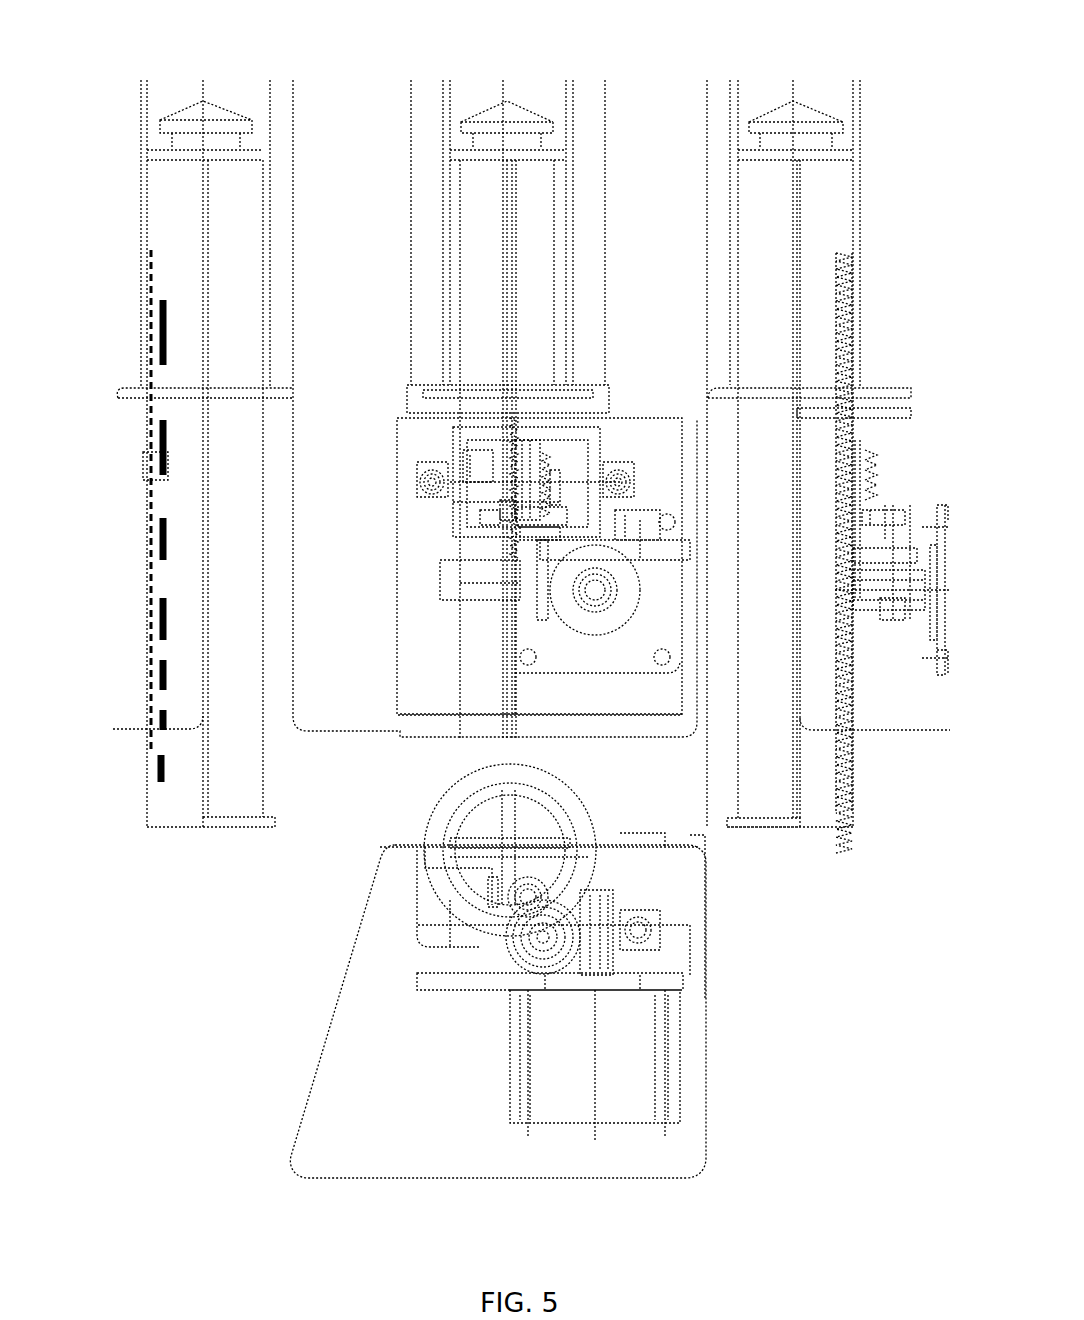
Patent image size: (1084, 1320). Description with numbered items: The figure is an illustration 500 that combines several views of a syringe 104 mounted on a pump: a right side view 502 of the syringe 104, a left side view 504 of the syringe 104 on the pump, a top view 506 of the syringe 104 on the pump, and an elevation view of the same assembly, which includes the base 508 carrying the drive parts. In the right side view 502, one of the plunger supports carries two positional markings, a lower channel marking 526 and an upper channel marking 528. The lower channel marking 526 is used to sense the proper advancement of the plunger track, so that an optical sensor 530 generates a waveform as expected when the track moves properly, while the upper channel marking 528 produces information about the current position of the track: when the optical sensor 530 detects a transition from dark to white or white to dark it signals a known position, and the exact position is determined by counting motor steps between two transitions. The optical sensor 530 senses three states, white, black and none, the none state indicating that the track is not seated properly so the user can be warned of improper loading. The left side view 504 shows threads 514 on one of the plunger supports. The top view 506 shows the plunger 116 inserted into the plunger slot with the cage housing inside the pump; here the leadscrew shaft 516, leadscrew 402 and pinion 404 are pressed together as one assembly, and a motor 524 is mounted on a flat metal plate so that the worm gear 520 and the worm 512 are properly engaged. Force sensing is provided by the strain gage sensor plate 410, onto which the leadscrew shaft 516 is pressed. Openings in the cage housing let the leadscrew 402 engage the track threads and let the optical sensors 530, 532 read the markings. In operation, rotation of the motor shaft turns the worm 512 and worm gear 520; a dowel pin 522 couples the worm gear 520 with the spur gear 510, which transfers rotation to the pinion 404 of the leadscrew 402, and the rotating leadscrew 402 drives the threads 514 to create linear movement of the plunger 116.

The illustration 500 is at (207, 46).
The right side view 502 is at (222, 830).
The left side view 504 is at (805, 828).
The top view 506 is at (412, 735).
The base 508 is at (700, 1000).
The spur gear 510 is at (563, 507).
The worm 512 is at (598, 612).
The threads 514 is at (853, 752).
The leadscrew shaft 516 is at (525, 532).
The worm gear 520 is at (525, 600).
The dowel pin 522 is at (543, 620).
The motor 524 is at (672, 1070).
The lower channel marking 526 is at (152, 245).
The upper channel marking 528 is at (165, 300).
The optical sensor 530 is at (487, 453).
The optical sensor 532 is at (493, 484).
The syringe 104 is at (573, 291).
The plunger 116 is at (458, 583).
The leadscrew 402 is at (543, 463).
The pinion 404 is at (508, 510).
The strain gage sensor plate 410 is at (567, 930).